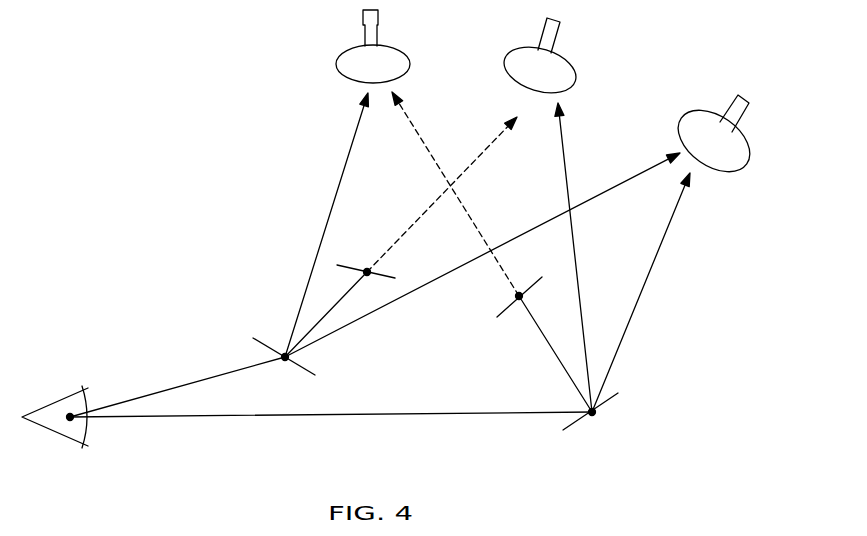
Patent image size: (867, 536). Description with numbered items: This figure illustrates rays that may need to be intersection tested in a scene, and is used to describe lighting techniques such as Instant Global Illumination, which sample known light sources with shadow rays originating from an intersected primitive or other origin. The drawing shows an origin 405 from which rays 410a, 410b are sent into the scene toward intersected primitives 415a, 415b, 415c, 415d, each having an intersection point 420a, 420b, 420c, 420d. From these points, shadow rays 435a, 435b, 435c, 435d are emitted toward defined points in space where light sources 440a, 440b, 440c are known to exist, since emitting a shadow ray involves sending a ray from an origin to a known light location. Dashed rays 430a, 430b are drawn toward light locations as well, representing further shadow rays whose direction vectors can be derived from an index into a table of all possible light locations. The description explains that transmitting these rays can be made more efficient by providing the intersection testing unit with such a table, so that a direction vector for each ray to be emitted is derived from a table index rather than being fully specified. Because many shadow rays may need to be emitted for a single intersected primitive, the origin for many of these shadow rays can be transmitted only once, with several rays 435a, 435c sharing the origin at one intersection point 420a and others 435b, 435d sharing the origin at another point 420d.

The viewpoint / camera eye 405 is at (48, 432).
The line of sight to first point 410a is at (166, 390).
The line of sight to fourth point 410b is at (198, 420).
The surface patch at first point 415a is at (302, 372).
The surface patch at second point 415b is at (352, 262).
The surface patch at third point 415c is at (524, 284).
The surface patch at fourth point 415d is at (605, 405).
The first sample point 420a is at (281, 349).
The second sample point 420b is at (385, 266).
The third sample point 420c is at (515, 310).
The fourth sample point 420d is at (588, 424).
The occluded light direction from third point 430a is at (422, 132).
The occluded light direction from second point 430b is at (436, 200).
The light direction to first light source 435a is at (341, 170).
The light direction to second light source 435b is at (564, 153).
The light direction to third light source 435c is at (341, 330).
The light direction to third light source from fourth point 435d is at (650, 276).
The first light source 440a is at (335, 63).
The second light source 440b is at (577, 80).
The third light source 440c is at (748, 152).